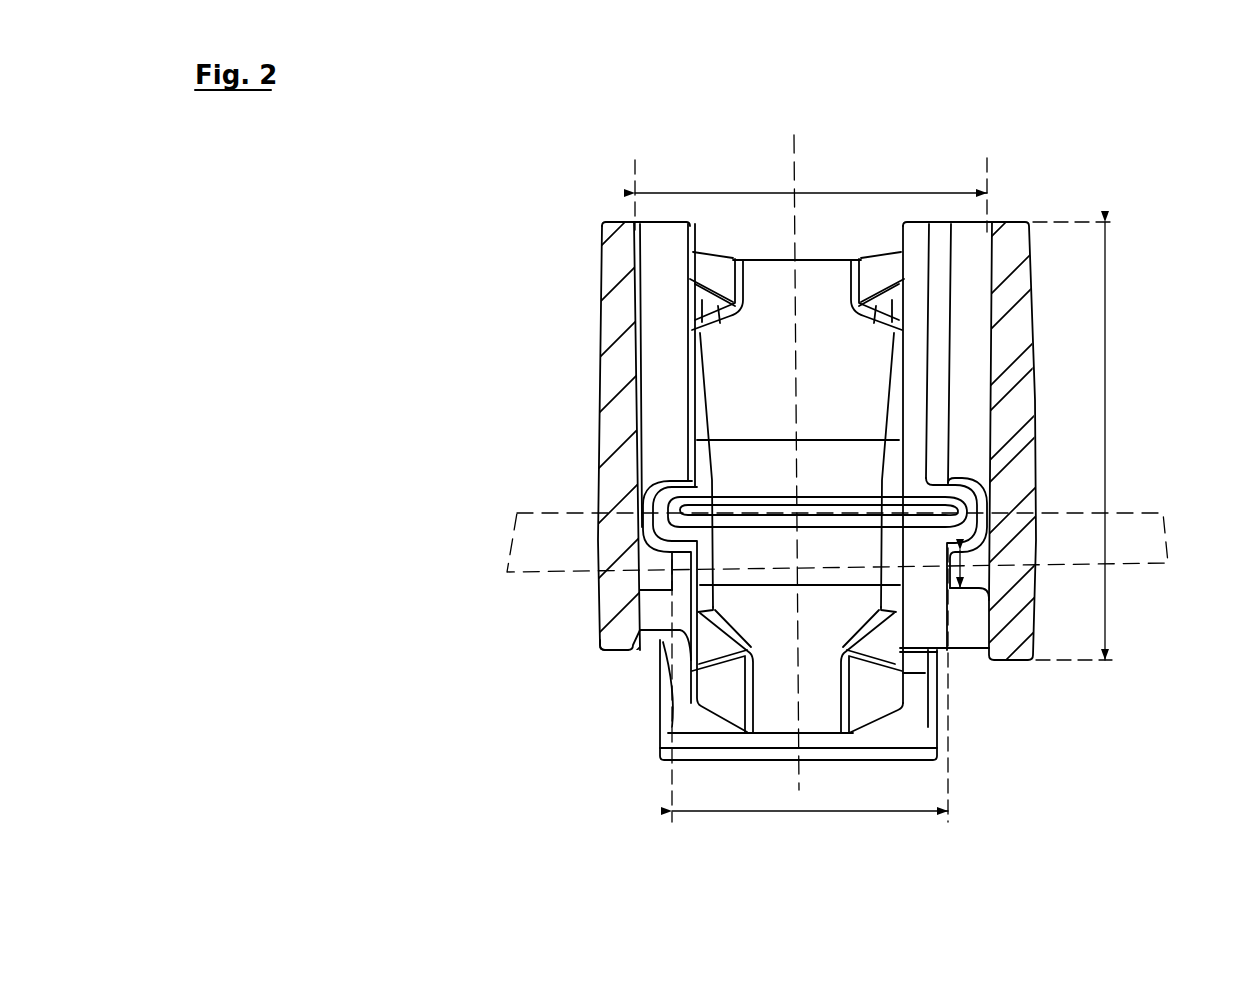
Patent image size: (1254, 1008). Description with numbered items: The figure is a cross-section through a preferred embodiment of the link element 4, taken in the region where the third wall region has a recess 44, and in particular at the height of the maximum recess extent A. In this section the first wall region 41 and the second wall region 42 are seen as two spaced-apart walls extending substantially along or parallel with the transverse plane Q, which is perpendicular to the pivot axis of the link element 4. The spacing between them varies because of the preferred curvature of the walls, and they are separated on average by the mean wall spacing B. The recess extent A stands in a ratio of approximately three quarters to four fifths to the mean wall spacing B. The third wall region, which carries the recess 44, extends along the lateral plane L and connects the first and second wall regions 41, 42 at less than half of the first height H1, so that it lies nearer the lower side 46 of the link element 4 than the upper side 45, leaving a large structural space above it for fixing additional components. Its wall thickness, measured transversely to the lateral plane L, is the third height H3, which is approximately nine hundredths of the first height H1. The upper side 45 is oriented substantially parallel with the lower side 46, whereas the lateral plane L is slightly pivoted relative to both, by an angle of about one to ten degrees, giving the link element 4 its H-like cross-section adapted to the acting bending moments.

The link element 4 is at (1040, 209).
The first wall region 41 is at (1020, 407).
The second wall region 42 is at (612, 352).
The recess 44 is at (842, 512).
The upper side 45 is at (628, 214).
The lower side 46 is at (610, 655).
The mean wall spacing B is at (852, 192).
The first height H1 is at (1105, 360).
The third height H3 is at (960, 590).
The maximum recess extent A is at (843, 812).
The transverse plane Q is at (800, 770).
The lateral plane L is at (1160, 520).